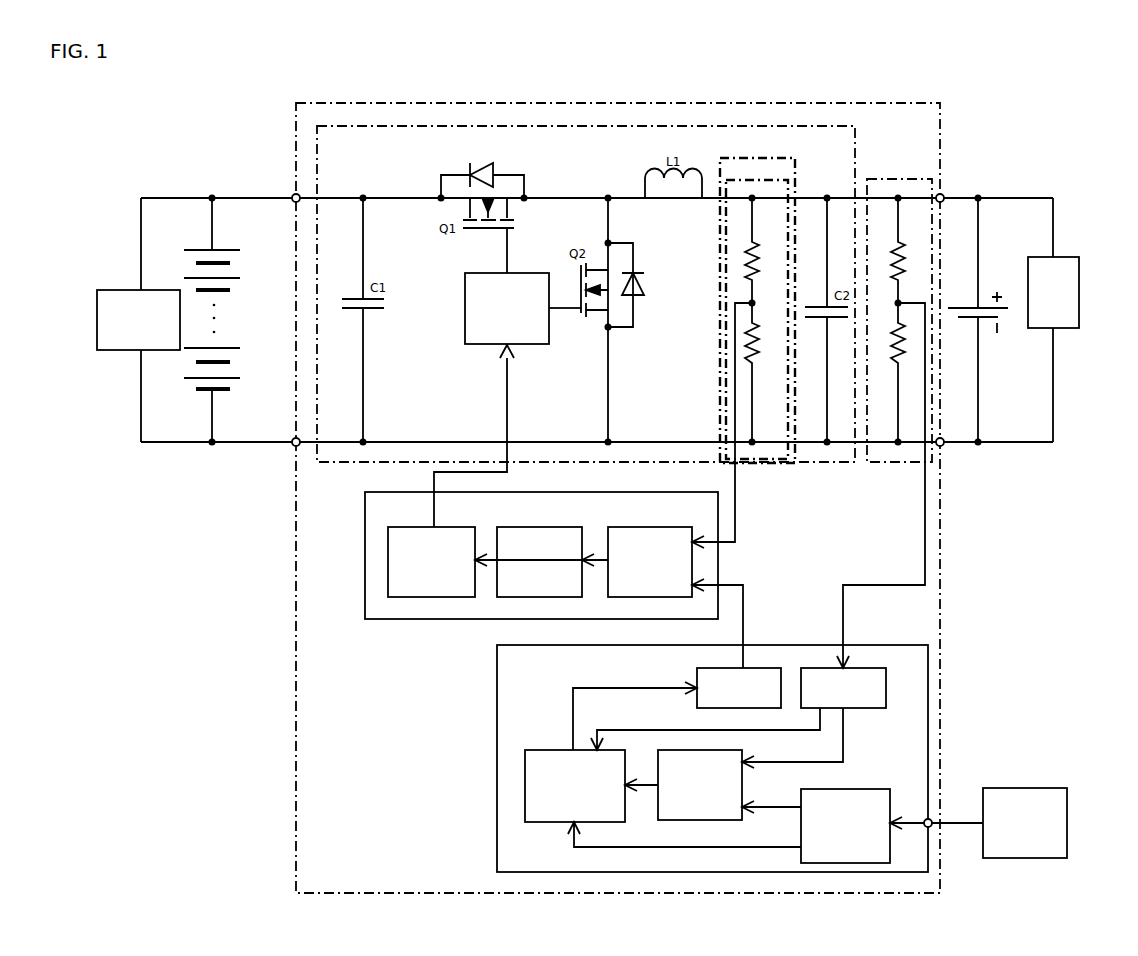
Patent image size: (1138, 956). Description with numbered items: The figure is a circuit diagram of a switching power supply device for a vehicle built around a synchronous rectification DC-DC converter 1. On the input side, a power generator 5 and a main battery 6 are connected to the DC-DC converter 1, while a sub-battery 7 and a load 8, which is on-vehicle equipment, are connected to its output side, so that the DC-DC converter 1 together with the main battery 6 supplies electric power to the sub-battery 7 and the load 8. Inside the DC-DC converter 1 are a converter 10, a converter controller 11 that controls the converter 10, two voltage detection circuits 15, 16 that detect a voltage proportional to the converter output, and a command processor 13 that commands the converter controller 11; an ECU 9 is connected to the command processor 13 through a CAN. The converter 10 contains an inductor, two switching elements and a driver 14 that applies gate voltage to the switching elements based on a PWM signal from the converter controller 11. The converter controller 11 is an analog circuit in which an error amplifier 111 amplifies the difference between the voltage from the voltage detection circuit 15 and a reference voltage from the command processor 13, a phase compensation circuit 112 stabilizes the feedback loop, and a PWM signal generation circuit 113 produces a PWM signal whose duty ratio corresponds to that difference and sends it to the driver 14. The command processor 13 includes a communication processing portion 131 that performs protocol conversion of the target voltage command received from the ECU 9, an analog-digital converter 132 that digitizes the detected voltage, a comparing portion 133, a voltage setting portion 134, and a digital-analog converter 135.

The DC-DC converter 1 is at (940, 150).
The power generator 5 is at (147, 290).
The main battery 6 is at (228, 248).
The sub-battery 7 is at (956, 303).
The load 8 is at (1078, 257).
The ECU 9 is at (1043, 788).
The converter 10 is at (857, 152).
The converter controller 11 is at (363, 518).
The command processor 13 is at (497, 740).
The driver 14 is at (477, 345).
The voltage detection circuit 15 is at (758, 463).
The voltage detection circuit 16 is at (887, 463).
The error amplifier 111 is at (658, 527).
The phase compensation circuit 112 is at (503, 597).
The PWM signal generation circuit 113 is at (417, 597).
The communication processing portion 131 is at (873, 789).
The analog-digital converter 132 is at (873, 668).
The comparing portion 133 is at (743, 783).
The voltage setting portion 134 is at (543, 824).
The digital-analog converter 135 is at (765, 668).